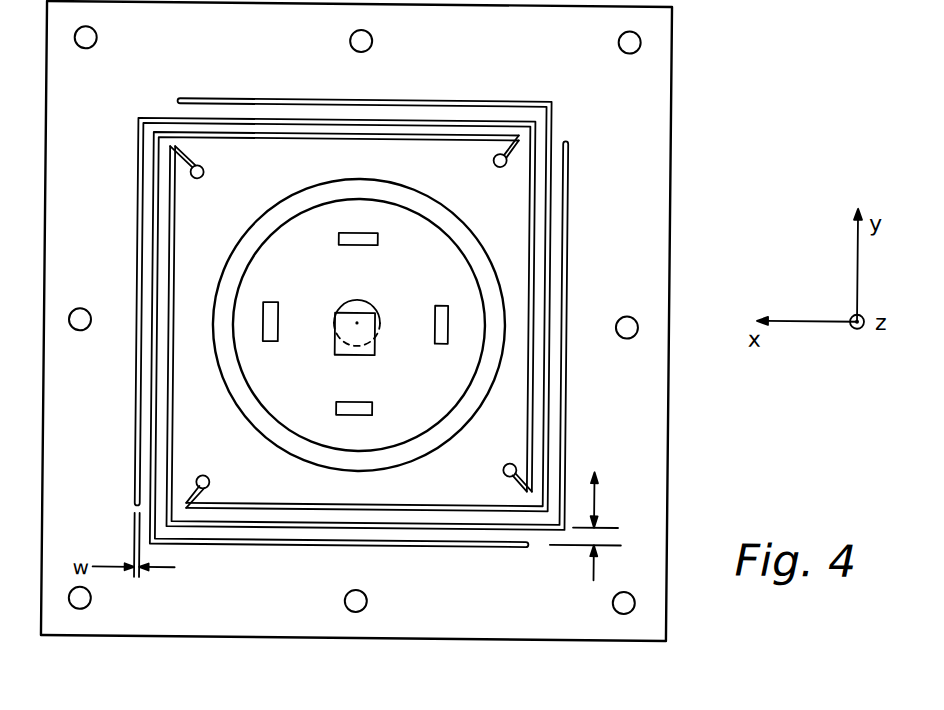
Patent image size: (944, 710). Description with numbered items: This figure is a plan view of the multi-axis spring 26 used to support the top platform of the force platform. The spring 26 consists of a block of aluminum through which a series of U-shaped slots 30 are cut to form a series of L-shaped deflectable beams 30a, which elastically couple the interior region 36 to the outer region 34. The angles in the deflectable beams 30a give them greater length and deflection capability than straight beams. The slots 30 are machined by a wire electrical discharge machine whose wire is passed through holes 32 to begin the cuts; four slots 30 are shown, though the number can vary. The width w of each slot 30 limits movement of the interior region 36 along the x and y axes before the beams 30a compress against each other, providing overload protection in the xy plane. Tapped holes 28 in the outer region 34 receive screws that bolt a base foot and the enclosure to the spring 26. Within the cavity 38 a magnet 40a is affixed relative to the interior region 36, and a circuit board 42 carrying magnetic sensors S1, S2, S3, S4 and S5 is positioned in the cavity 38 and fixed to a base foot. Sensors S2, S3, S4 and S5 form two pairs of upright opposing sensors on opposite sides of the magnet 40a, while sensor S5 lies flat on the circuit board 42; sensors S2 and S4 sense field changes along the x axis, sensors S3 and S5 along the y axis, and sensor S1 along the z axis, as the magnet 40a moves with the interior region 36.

The multi-axis spring 26 is at (680, 118).
The tapped holes 28 is at (638, 40).
The U-shaped slots 30 is at (405, 100).
The deflectable beams 30a is at (478, 116).
The holes 32 is at (198, 180).
The outer region 34 is at (247, 612).
The interior region 36 is at (197, 388).
The cavity 38 is at (420, 440).
The magnet 40a is at (362, 305).
The circuit board 42 is at (433, 215).
The magnetic sensor S1 is at (347, 355).
The magnetic sensor S2 is at (272, 303).
The magnetic sensor S3 is at (352, 401).
The magnetic sensor S4 is at (434, 312).
The magnetic sensor S5 is at (355, 233).